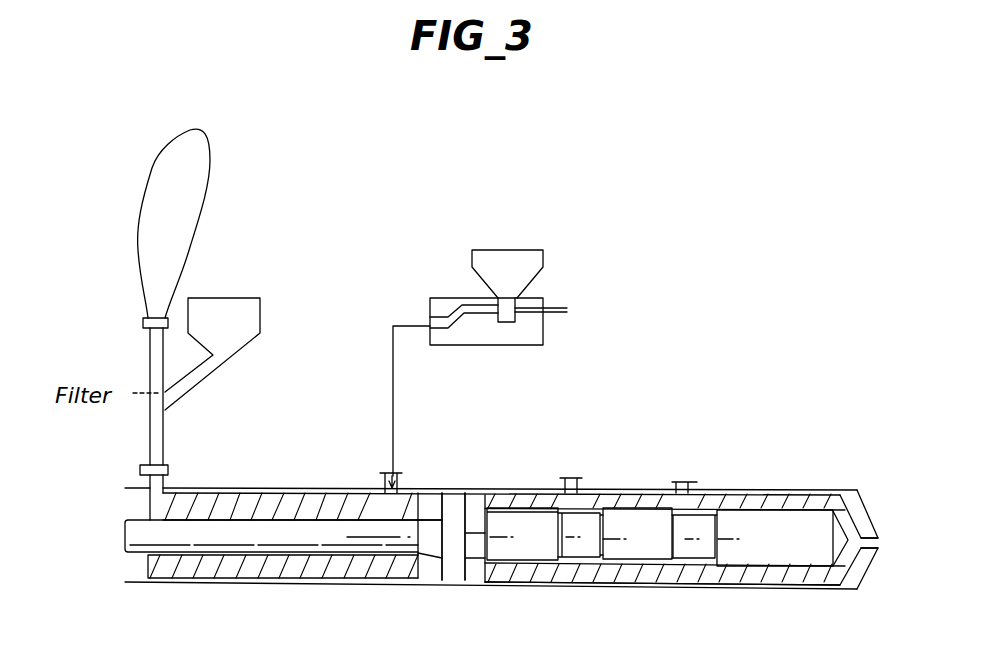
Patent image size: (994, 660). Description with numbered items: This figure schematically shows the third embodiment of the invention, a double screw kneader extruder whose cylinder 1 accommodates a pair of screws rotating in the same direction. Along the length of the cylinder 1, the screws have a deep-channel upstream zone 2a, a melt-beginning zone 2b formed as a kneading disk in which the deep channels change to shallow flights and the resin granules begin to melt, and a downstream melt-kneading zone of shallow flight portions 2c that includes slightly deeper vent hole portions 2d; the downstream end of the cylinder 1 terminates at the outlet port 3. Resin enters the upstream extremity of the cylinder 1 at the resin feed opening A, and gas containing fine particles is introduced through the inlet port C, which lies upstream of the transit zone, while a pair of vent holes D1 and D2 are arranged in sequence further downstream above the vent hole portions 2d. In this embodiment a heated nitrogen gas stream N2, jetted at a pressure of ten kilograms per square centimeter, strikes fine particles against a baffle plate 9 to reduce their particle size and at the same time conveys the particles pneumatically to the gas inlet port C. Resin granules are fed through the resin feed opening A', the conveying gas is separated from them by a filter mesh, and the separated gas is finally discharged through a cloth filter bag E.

The cylinder 1 is at (228, 488).
The upstream zone deep-channel portion 2a is at (273, 530).
The melt-beginning zone 2b is at (465, 510).
The shallow flight portions 2c is at (513, 517).
The vent hole portions 2d is at (583, 520).
The outlet port 3 is at (897, 543).
The baffle plate 9 is at (452, 312).
The resin feed opening A is at (157, 419).
The resin feed opening A' is at (212, 344).
The inlet port C is at (405, 409).
The vent hole D1 is at (571, 460).
The vent hole D2 is at (682, 463).
The cloth filter bag E is at (182, 205).
The nitrogen gas stream N2 is at (582, 313).